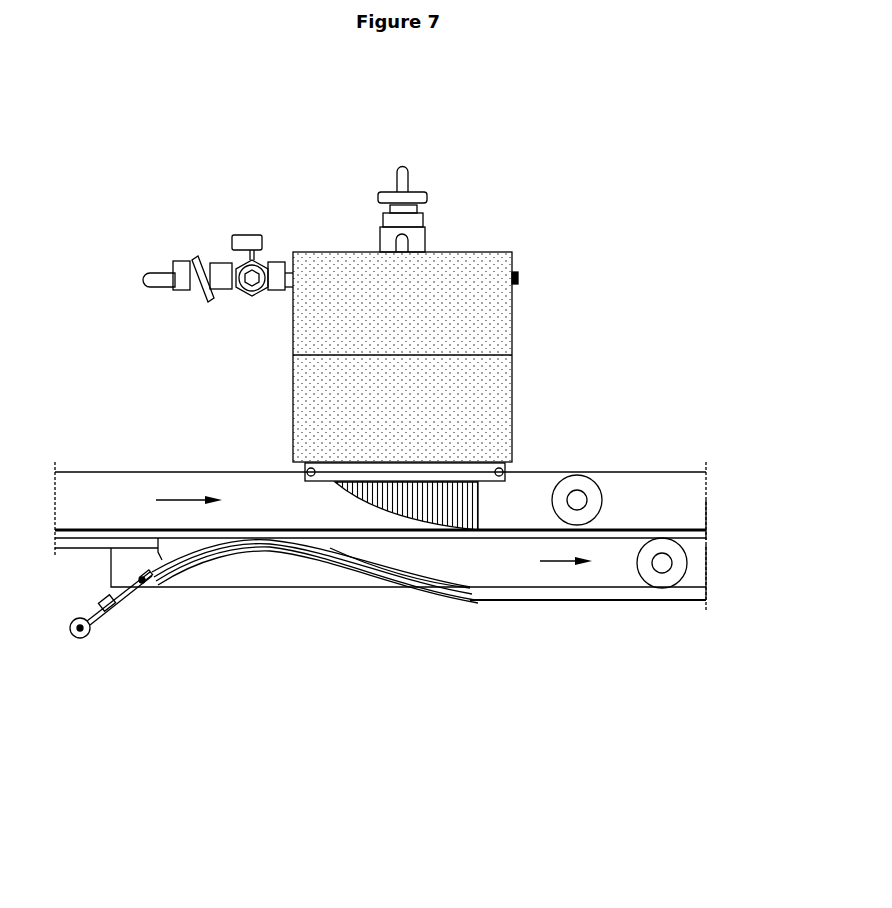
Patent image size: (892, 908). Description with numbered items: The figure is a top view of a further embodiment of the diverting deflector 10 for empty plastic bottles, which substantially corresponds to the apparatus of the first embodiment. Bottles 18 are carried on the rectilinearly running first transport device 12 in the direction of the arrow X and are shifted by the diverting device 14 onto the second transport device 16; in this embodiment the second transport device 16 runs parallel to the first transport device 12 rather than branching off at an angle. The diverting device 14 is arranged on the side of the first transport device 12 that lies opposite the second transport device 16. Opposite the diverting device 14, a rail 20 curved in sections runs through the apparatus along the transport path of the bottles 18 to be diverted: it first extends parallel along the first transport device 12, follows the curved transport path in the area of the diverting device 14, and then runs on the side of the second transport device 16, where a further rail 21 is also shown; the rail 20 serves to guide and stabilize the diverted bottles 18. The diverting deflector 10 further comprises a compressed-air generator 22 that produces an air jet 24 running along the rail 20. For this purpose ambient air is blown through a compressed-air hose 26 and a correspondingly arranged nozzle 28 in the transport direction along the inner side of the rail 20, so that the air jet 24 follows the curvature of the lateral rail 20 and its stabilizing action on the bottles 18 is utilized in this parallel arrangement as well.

The diverting deflector 10 is at (606, 362).
The first transport device 12 is at (652, 485).
The diverting device 14 is at (500, 268).
The second transport device 16 is at (707, 567).
The bottles 18 is at (663, 580).
The rail 20 is at (468, 605).
The rail 21 is at (707, 522).
The compressed-air generator 22 is at (85, 640).
The air jet 24 is at (318, 562).
The compressed-air hose 26 is at (141, 597).
The nozzle 28 is at (222, 558).